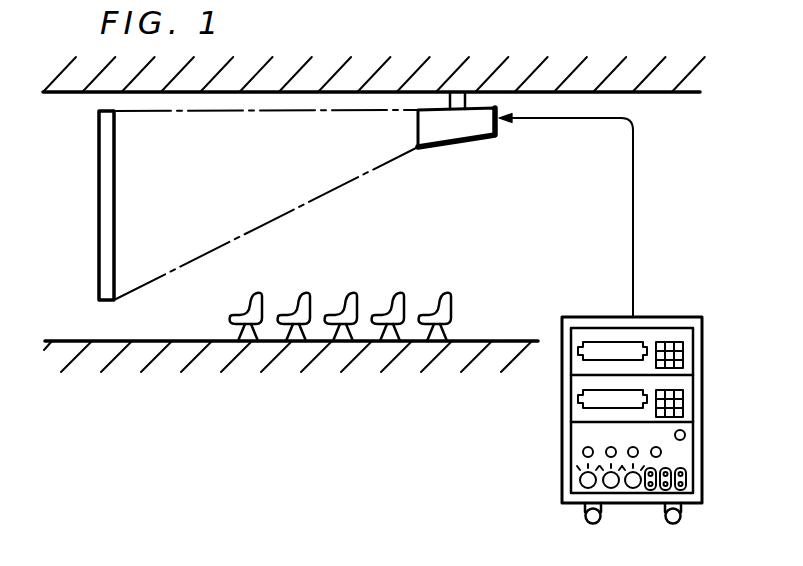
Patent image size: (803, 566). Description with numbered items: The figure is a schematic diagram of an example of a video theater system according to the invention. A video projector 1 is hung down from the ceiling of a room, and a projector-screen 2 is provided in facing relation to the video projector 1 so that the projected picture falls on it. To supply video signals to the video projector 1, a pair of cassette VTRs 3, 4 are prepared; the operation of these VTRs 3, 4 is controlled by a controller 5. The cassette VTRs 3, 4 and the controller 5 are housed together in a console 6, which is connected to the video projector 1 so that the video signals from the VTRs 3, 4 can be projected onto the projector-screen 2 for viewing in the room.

The video projector 1 is at (482, 115).
The projector-screen 2 is at (98, 208).
The cassette VTR 3 is at (685, 355).
The cassette VTR 4 is at (685, 405).
The controller 5 is at (685, 460).
The console 6 is at (668, 317).